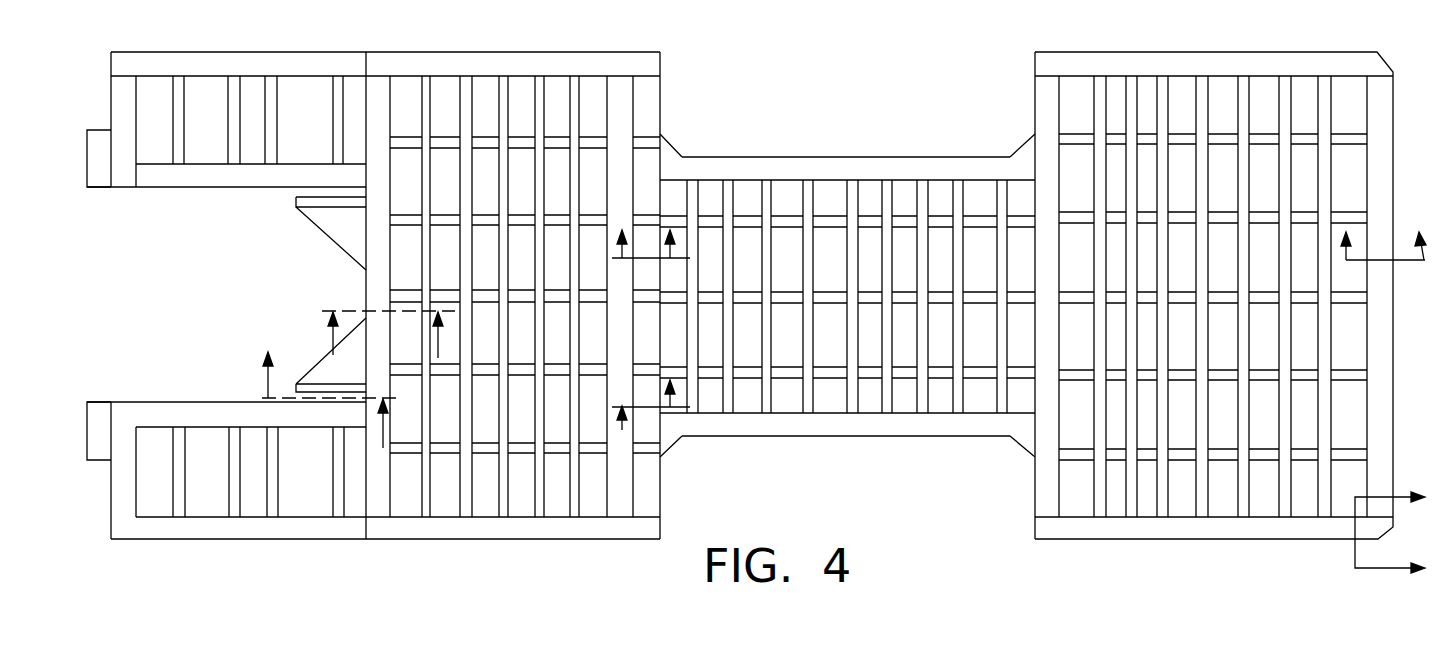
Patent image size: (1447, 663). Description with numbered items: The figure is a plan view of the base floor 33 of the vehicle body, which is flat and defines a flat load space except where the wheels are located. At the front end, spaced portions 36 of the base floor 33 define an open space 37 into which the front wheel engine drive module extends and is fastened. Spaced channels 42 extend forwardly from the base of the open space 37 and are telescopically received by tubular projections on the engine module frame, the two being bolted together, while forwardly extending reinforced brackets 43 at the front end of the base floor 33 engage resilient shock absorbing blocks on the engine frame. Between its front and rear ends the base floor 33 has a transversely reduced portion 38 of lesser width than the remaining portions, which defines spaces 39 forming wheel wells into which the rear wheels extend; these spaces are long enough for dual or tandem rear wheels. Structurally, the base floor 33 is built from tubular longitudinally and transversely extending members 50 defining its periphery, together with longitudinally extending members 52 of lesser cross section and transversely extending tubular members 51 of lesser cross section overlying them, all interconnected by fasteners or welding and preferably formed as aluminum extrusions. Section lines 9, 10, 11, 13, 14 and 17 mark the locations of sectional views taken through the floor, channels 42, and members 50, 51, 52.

The section line 9- 9 is at (328, 400).
The section line 10- 10 is at (649, 407).
The section line 11- 11 is at (396, 340).
The section line 13- 13 is at (1391, 545).
The section line 14- 14 is at (1378, 260).
The section line 17- 17 is at (649, 259).
The base floor 33 is at (748, 142).
The spaced portions 36 is at (305, 66).
The open space 37 is at (200, 280).
The transversely reduced portion 38 is at (790, 428).
The spaces 39 is at (1022, 105).
The spaced channels 42 is at (332, 203).
The reinforced brackets 43 is at (95, 175).
The tubular longitudinally and transversely extending members 50 is at (233, 52).
The transversely extending tubular members 51 is at (505, 500).
The longitudinally extending members 52 is at (440, 450).